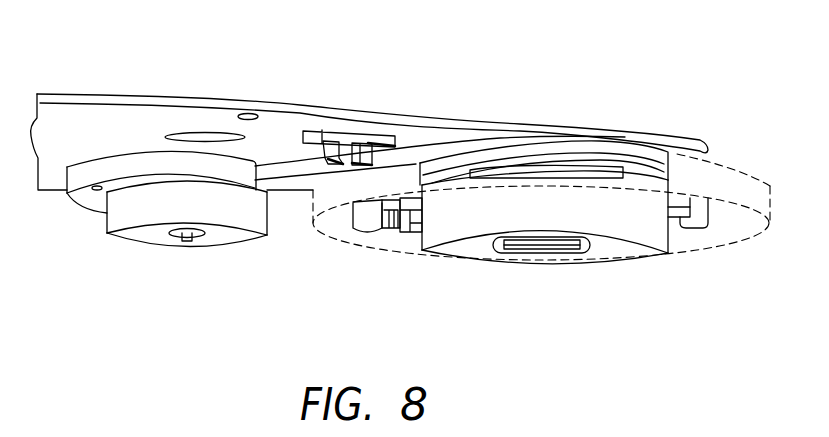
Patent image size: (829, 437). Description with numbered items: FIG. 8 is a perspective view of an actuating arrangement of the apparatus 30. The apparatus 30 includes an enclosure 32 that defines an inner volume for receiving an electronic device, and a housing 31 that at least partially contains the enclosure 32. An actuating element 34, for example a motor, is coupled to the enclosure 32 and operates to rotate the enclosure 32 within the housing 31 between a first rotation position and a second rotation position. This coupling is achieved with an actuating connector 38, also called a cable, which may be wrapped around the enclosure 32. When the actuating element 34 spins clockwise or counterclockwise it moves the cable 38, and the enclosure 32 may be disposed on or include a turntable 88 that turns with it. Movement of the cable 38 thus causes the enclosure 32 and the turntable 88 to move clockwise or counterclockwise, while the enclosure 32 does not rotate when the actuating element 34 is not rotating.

The apparatus 30 is at (72, 49).
The housing 31 is at (750, 193).
The enclosure 32 is at (470, 212).
The actuating element 34 is at (155, 203).
The actuating connector 38 is at (304, 167).
The turntable 88 is at (573, 158).